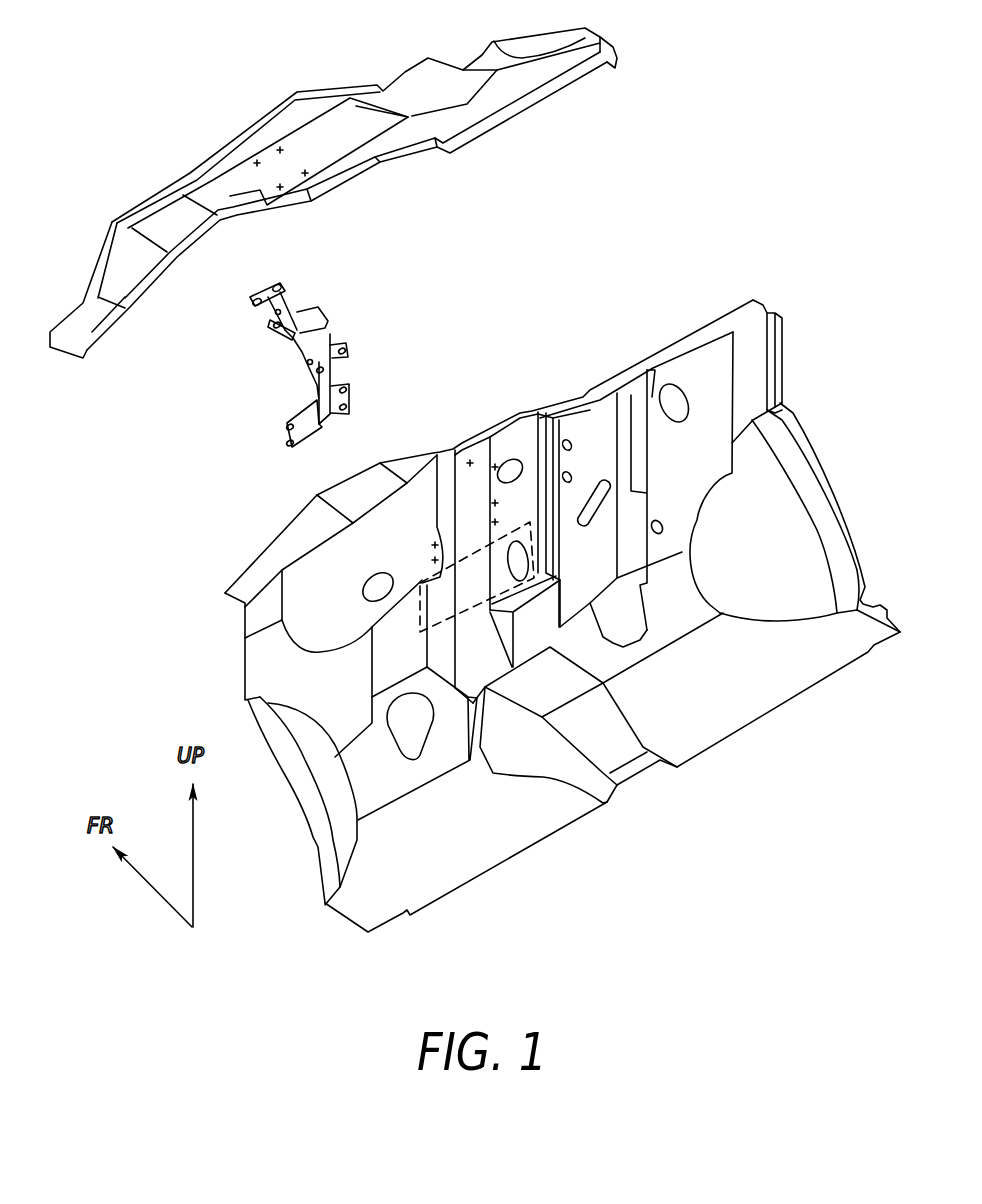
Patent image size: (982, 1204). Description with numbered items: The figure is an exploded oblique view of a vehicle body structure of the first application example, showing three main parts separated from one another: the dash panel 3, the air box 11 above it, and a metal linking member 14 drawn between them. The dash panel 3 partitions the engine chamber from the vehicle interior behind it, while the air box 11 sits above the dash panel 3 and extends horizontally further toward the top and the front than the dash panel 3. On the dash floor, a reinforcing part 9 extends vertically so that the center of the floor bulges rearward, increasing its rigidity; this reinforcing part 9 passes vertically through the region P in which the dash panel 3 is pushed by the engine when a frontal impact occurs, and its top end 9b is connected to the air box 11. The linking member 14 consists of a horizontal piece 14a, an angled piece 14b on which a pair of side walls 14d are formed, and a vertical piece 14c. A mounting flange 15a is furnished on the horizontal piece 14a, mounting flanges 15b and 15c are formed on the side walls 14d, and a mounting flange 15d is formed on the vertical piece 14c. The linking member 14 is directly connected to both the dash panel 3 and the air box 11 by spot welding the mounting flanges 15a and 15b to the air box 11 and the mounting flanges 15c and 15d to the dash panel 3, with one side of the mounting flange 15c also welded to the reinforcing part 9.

The dash panel 3 is at (562, 600).
The reinforcing part 9 is at (502, 418).
The top end 9b is at (463, 458).
The air box 11 is at (464, 154).
The linking member 14 is at (306, 354).
The horizontal piece 14a is at (273, 289).
The angled piece 14b is at (283, 311).
The vertical piece 14c is at (322, 412).
The side walls 14d is at (316, 401).
The mounting flange 15a is at (276, 332).
The mounting flange 15b is at (301, 361).
The mounting flange 15c is at (344, 349).
The mounting flange 15d is at (349, 399).
The region P is at (414, 633).